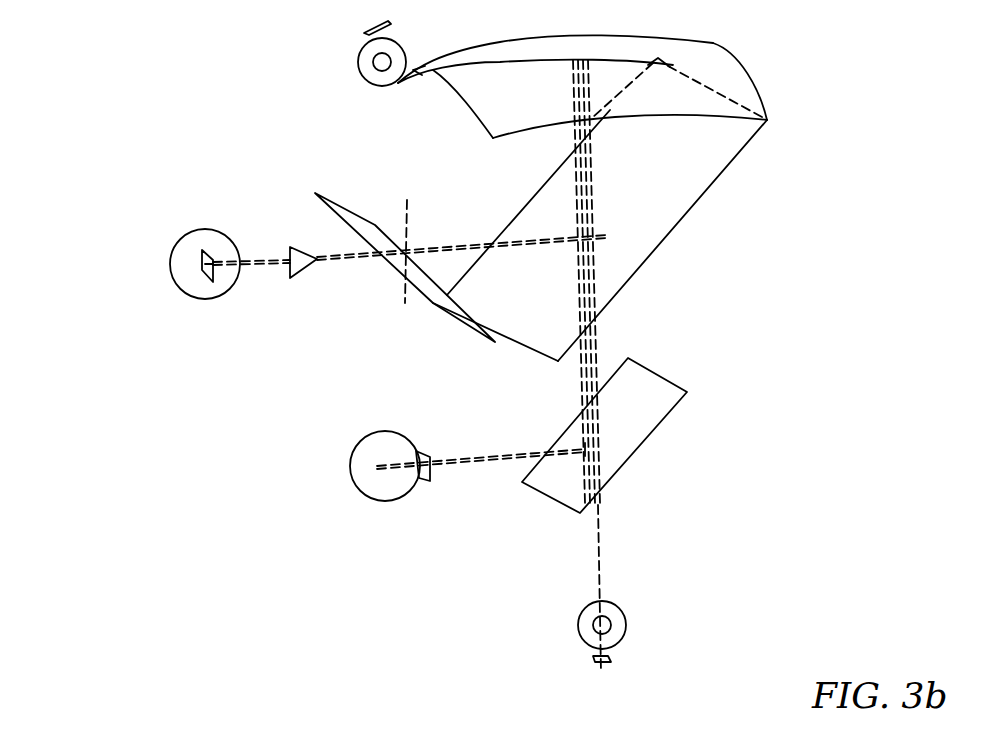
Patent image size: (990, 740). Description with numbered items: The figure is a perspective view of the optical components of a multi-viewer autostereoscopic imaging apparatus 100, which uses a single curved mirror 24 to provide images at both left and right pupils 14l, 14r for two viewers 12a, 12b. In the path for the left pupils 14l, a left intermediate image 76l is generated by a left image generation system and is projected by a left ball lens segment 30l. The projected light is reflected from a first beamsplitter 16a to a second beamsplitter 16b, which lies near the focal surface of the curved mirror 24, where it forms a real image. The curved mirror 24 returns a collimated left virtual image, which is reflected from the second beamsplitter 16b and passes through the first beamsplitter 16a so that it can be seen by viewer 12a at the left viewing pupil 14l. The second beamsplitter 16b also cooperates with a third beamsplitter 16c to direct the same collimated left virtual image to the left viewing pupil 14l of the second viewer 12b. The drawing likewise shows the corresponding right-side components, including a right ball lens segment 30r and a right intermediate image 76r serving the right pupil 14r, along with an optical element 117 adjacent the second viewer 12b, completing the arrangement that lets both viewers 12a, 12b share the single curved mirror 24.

The curved mirror 24 is at (677, 40).
The first beamsplitter 16a is at (427, 288).
The second beamsplitter 16b is at (533, 220).
The third beamsplitter 16c is at (673, 412).
The viewer 12a is at (192, 289).
The viewer 12b is at (382, 492).
The left pupil 14l is at (203, 298).
The right pupil 14r is at (383, 502).
The lens 117 is at (420, 452).
The left ball lens segment 30l is at (360, 83).
The right eye 30r is at (625, 622).
The left intermediate image 76l is at (367, 33).
The right eye tracking sensor 76r is at (593, 660).
The multi-viewer autostereoscopic imaging apparatus 100 is at (424, 624).